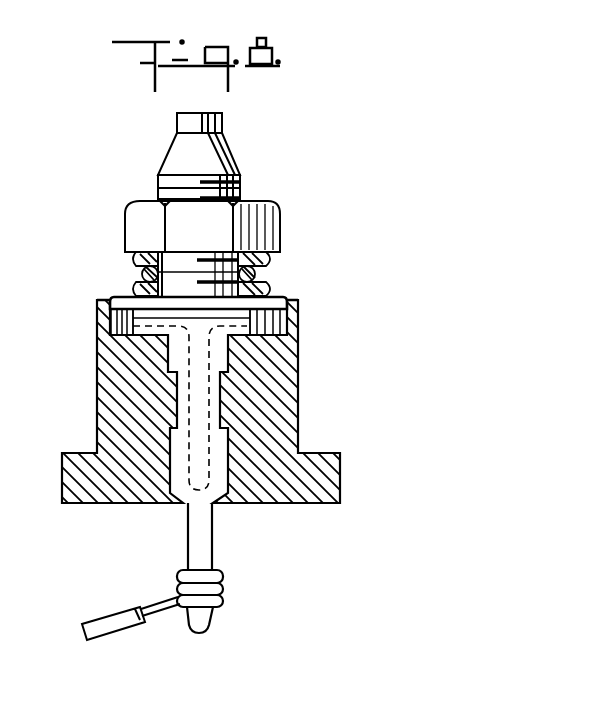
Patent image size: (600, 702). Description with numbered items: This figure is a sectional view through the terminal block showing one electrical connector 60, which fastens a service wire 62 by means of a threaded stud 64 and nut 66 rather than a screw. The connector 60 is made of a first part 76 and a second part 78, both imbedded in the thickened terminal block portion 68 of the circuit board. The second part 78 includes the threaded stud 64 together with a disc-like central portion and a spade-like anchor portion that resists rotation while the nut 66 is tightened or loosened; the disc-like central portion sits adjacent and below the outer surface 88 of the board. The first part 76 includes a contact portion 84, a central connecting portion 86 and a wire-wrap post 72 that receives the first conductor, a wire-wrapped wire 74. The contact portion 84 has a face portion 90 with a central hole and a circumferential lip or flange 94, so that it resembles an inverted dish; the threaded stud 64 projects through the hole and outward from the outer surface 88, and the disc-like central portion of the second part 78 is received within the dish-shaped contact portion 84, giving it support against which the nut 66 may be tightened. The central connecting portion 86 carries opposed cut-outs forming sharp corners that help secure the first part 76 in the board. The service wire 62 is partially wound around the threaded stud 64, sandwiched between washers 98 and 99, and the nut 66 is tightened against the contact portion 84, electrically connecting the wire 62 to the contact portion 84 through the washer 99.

The electrical connector 60 is at (250, 147).
The threaded stud 64 is at (160, 176).
The second part 78 is at (245, 180).
The nut 66 is at (135, 218).
The washer 98 is at (280, 262).
The service wire 62 is at (273, 272).
The washer 99 is at (275, 286).
The outer surface 88 is at (108, 305).
The face portion 90 is at (125, 297).
The circumferential lip or flange 94 is at (100, 312).
The contact portion 84 is at (107, 323).
The terminal block portion 68 is at (288, 373).
The first part 76 is at (160, 460).
The central connecting portion 86 is at (222, 470).
The wire-wrap post 72 is at (190, 542).
The wire-wrapped wire 74 is at (103, 617).